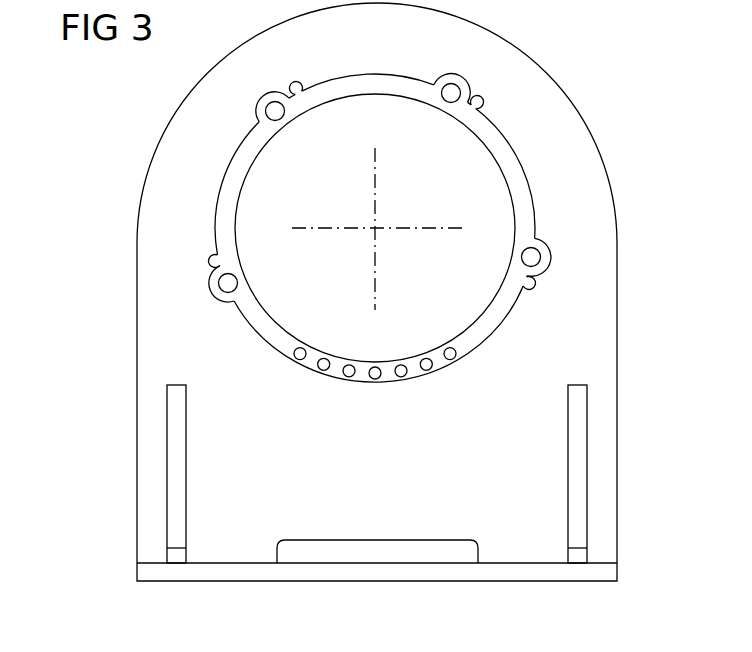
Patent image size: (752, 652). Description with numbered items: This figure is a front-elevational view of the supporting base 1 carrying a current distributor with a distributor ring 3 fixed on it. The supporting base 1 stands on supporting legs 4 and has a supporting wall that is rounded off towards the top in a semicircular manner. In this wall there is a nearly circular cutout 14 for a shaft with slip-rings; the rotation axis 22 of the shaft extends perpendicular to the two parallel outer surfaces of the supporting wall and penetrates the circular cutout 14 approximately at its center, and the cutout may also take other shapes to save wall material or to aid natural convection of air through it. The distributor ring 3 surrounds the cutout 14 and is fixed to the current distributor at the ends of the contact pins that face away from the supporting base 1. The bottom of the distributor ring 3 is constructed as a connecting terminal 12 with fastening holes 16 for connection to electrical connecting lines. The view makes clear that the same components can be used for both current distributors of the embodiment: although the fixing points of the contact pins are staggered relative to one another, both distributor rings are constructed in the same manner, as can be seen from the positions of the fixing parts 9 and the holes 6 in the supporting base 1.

The supporting base 1 is at (553, 102).
The distributor ring 3 is at (532, 196).
The supporting legs 4 is at (571, 463).
The holes 6 is at (297, 82).
The fixing parts 9 is at (527, 253).
The connecting terminal 12 is at (356, 419).
The circular cutout 14 is at (288, 178).
The fastening holes 16 is at (350, 376).
The rotation axis 22 is at (377, 227).